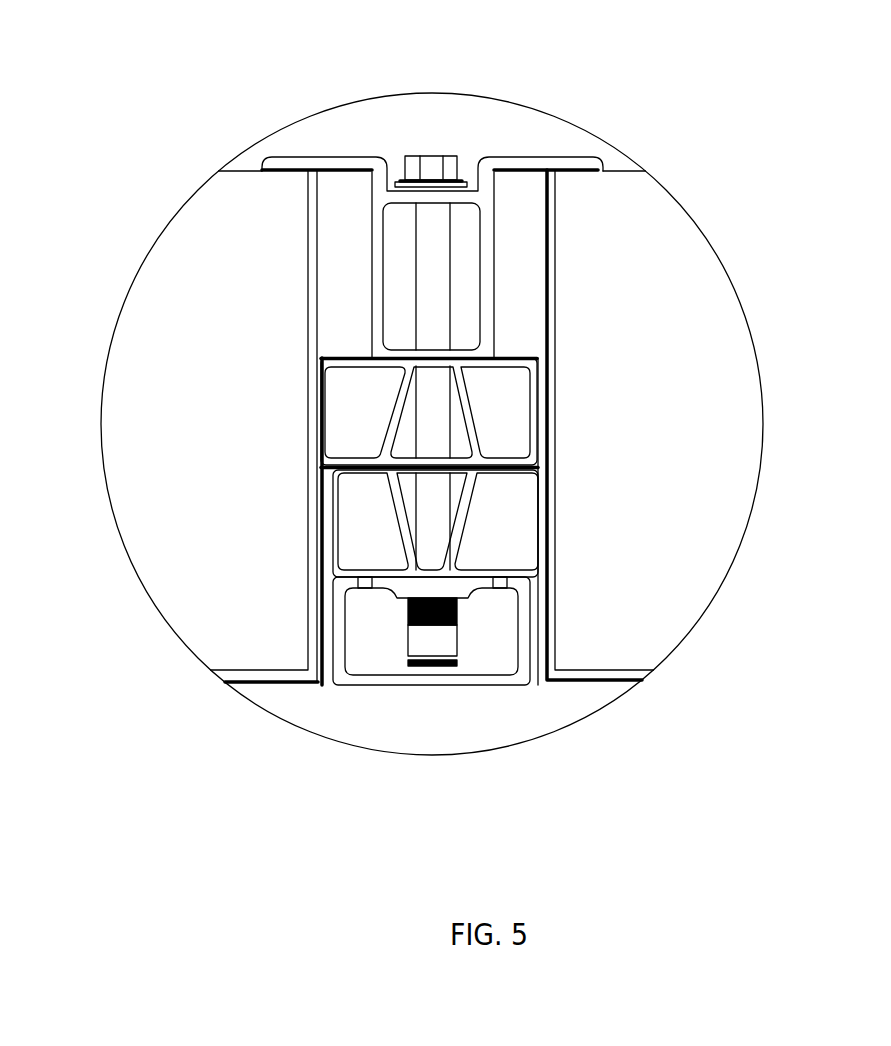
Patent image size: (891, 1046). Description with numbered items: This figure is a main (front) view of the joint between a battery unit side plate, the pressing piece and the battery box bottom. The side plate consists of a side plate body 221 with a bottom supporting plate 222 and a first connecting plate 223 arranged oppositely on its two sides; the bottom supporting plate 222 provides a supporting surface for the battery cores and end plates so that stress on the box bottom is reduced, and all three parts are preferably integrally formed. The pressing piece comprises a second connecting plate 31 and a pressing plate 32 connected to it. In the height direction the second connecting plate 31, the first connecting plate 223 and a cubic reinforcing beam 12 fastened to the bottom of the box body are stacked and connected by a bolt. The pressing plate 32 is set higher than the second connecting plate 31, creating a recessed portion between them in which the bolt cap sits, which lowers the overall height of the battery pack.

The reinforcing beam 12 is at (430, 682).
The second connecting plate 31 is at (378, 333).
The pressing plate 32 is at (313, 162).
The side plate body 221 is at (548, 464).
The bottom supporting plate 222 is at (308, 673).
The first connecting plate 223 is at (420, 372).